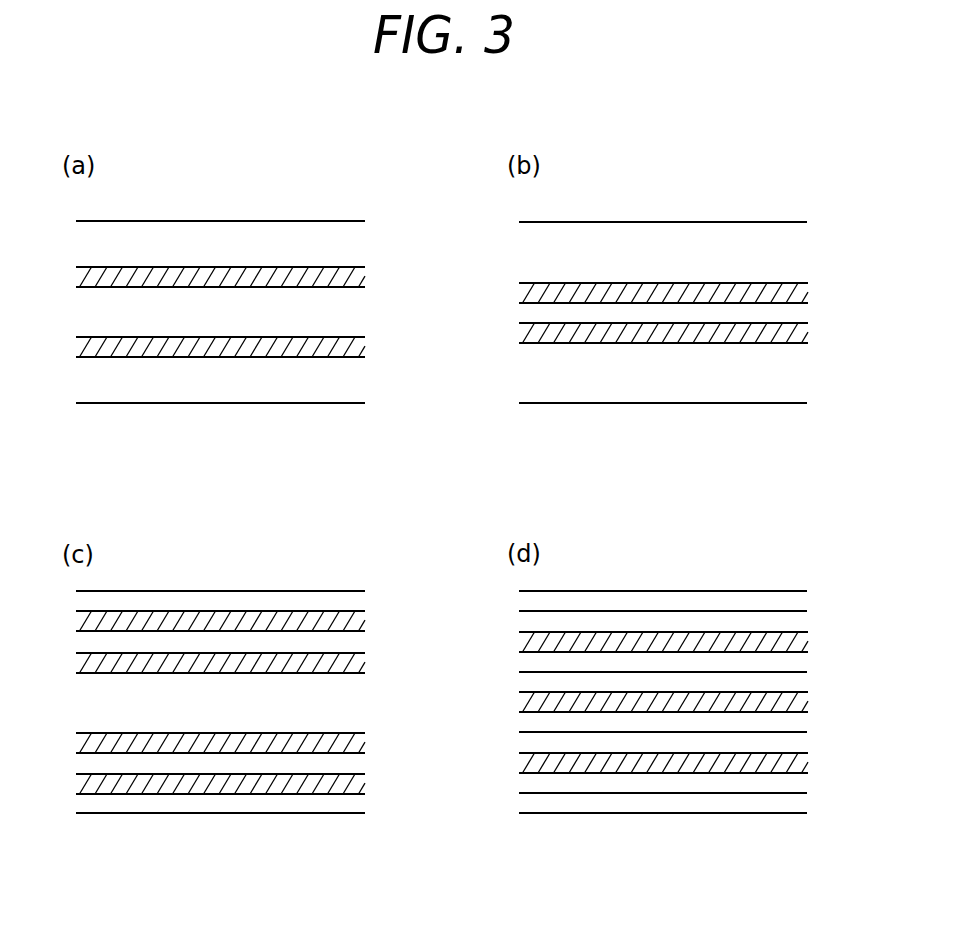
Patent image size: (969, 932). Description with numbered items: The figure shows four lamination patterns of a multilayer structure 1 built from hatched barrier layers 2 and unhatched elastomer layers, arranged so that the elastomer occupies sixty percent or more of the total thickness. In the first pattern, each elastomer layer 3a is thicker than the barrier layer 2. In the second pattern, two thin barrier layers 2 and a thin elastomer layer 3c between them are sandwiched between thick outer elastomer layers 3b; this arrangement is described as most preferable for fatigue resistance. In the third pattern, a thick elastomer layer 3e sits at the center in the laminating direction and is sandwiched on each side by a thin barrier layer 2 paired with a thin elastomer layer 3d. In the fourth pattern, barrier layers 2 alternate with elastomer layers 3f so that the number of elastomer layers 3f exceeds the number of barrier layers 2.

The multilayer structure 1 is at (441, 483).
The barrier layer 2 is at (441, 526).
The elastomer layer 3a is at (387, 307).
The elastomer layer 3b is at (830, 319).
The elastomer layer 3c is at (497, 317).
The elastomer layer 3d is at (389, 703).
The elastomer layer 3e is at (228, 701).
The elastomer layer 3f is at (689, 702).